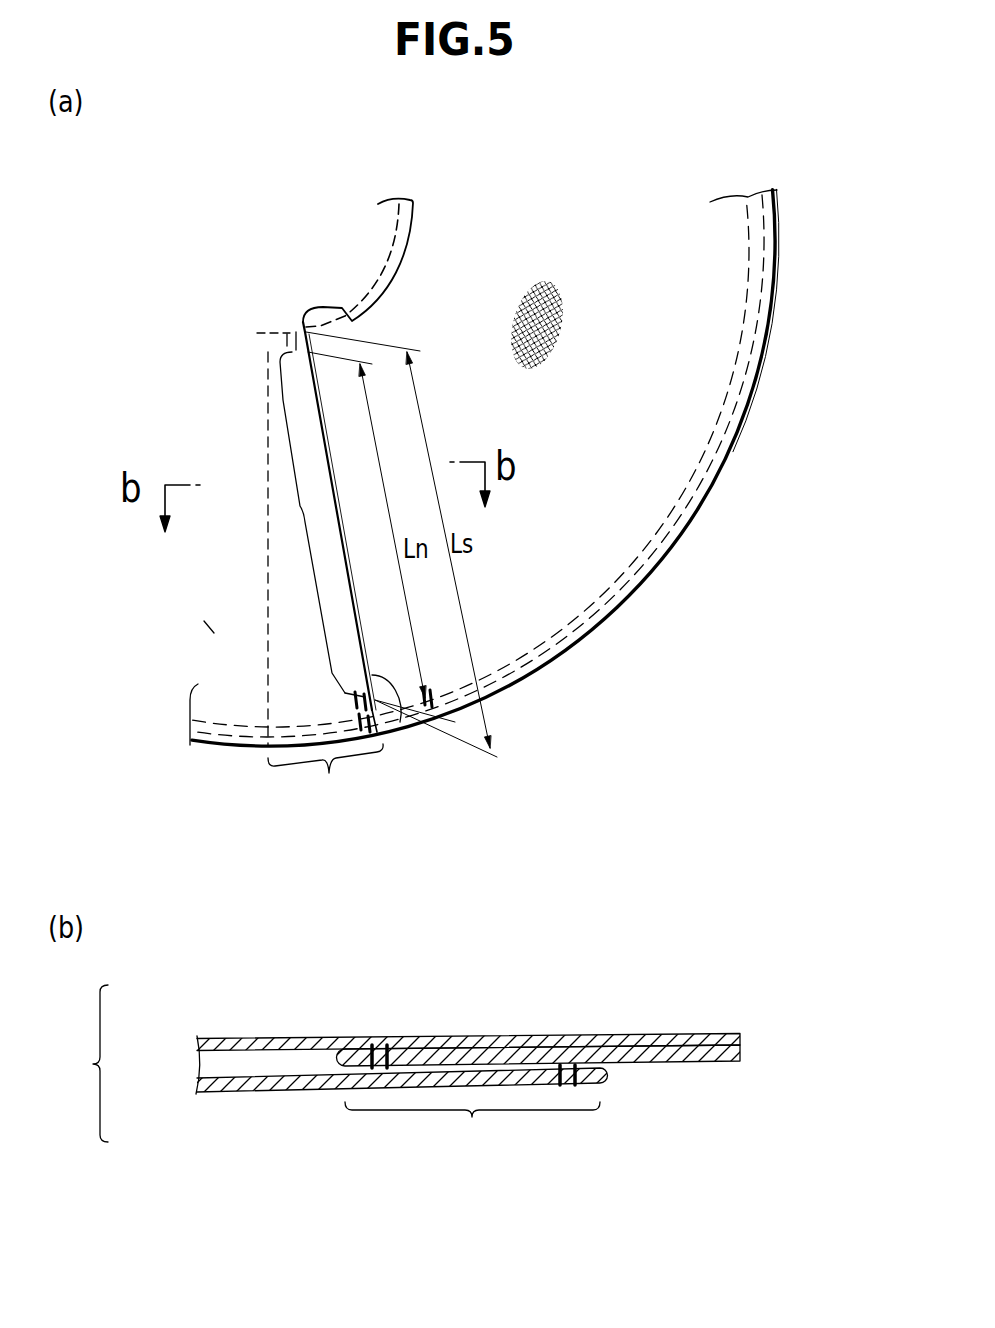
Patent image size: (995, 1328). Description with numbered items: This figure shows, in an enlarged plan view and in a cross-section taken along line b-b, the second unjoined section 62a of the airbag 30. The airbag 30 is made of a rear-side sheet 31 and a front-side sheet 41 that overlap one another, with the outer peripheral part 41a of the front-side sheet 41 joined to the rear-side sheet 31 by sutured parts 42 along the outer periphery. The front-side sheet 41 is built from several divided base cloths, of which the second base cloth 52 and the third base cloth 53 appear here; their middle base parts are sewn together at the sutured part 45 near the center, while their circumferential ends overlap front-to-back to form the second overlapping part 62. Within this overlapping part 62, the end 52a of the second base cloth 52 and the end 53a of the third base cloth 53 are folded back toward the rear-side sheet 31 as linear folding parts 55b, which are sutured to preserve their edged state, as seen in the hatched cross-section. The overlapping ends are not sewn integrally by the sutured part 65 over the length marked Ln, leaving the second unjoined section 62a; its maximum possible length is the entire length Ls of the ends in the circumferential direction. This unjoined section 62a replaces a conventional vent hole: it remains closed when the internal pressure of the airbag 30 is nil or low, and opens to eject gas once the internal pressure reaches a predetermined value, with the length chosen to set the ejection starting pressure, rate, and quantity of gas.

The airbag 30 is at (162, 258).
The rear-side sheet 31 is at (212, 1037).
The front-side sheet 41 is at (722, 364).
The outer peripheral part 41a is at (747, 403).
The sutured parts 42 is at (722, 432).
The sutured part 45 is at (397, 246).
The second base cloth 52 is at (638, 493).
The end of the second base cloth 52a is at (267, 642).
The third base cloth 53 is at (210, 627).
The end of the third base cloth 53a is at (400, 722).
The linear folding parts 55b is at (371, 1046).
The second overlapping part 62 is at (434, 737).
The second unjoined section 62a is at (301, 505).
The sutured part 65 is at (262, 340).